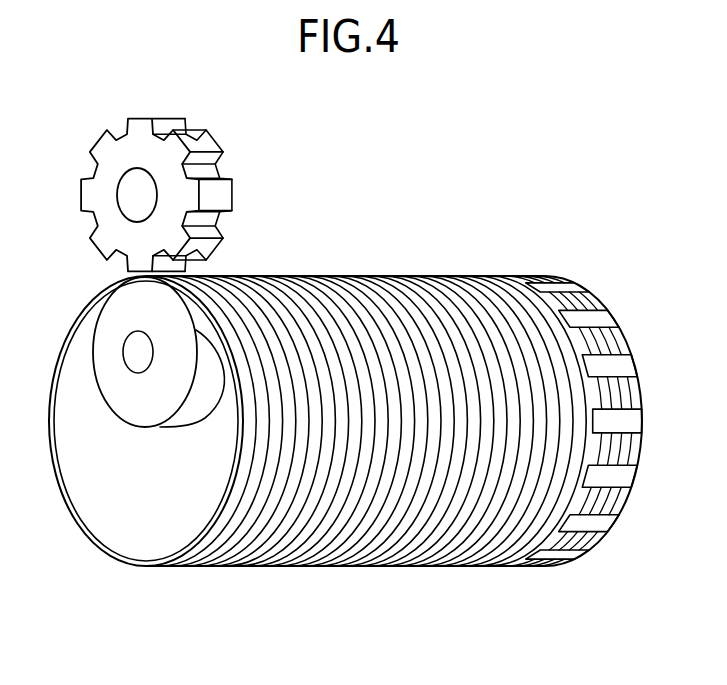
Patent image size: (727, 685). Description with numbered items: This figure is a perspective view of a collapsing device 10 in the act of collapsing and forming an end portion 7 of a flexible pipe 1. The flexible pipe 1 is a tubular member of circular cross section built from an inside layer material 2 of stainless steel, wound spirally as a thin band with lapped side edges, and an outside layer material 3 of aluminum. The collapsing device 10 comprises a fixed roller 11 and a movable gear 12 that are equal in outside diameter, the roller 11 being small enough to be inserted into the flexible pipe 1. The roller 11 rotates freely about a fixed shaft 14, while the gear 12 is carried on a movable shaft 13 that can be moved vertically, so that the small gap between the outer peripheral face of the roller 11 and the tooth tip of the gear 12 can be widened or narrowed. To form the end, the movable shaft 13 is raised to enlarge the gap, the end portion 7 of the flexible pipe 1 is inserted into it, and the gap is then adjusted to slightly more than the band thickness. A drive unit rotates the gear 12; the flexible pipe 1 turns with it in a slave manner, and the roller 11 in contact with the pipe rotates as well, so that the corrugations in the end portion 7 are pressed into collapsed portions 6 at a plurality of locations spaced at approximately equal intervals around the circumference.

The flexible pipe 1 is at (363, 568).
The inside layer material 2 is at (102, 517).
The outside layer material 3 is at (395, 295).
The collapsed portion 6 is at (562, 288).
The end portion 7 is at (127, 567).
The collapsing device 10 is at (176, 152).
The fixed roller 11 is at (148, 403).
The movable gear 12 is at (182, 148).
The movable shaft 13 is at (143, 204).
The fixed shaft 14 is at (133, 350).